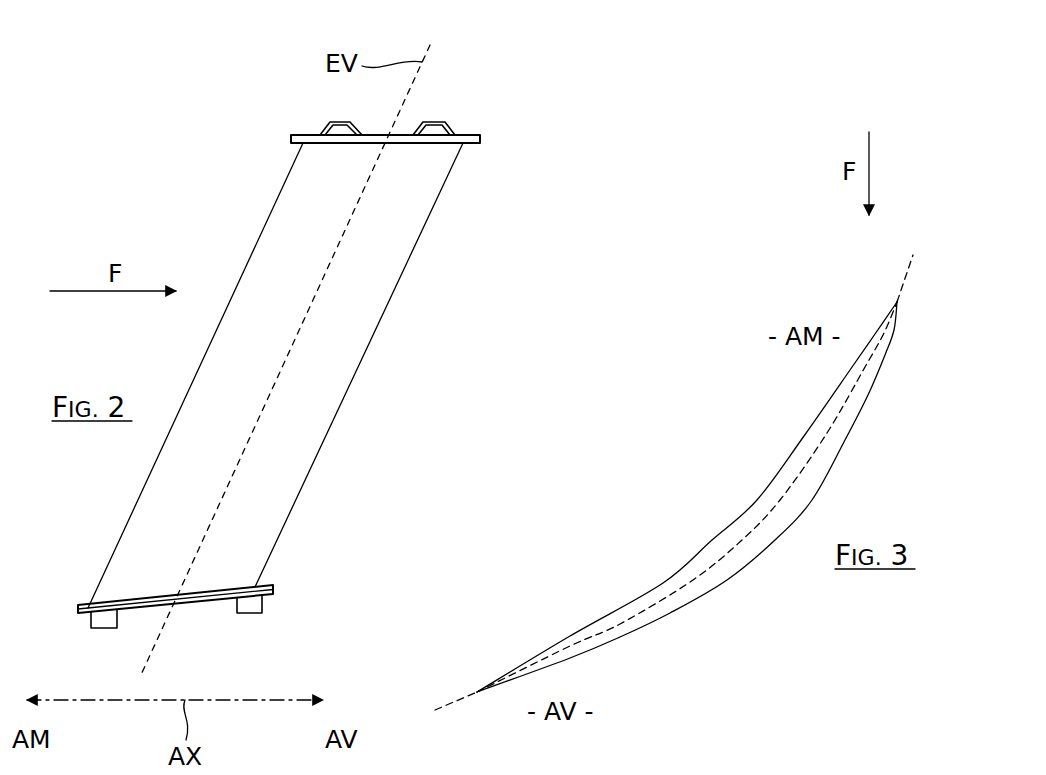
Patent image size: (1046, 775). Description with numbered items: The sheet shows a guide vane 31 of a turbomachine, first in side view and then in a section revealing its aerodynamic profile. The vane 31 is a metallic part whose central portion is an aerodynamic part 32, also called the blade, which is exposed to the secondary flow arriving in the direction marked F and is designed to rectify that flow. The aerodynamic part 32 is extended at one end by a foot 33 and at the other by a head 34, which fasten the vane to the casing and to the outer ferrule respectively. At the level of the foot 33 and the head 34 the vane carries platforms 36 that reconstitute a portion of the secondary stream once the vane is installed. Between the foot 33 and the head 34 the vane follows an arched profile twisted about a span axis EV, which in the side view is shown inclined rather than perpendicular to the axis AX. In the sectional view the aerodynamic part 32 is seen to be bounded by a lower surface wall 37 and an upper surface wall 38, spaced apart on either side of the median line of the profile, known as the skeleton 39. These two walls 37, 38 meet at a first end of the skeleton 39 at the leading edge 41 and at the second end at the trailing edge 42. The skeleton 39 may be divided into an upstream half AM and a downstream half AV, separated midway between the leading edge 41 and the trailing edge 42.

In FIG. 2, the guide vane 31 is at (178, 90).
In FIG. 2, the aerodynamic part 32 is at (420, 320).
In FIG. 2, the foot 33 is at (207, 622).
In FIG. 2, the head 34 is at (472, 108).
In FIG. 2, the platforms 36 is at (300, 134).
In FIG. 3, the lower surface wall 37 is at (716, 535).
In FIG. 3, the upper surface wall 38 is at (748, 563).
In FIG. 3, the skeleton 39 is at (612, 630).
In FIG. 2, the leading edge 41 is at (266, 222).
In FIG. 3, the leading edge 41 is at (897, 300).
In FIG. 2, the trailing edge 42 is at (327, 430).
In FIG. 3, the trailing edge 42 is at (477, 690).